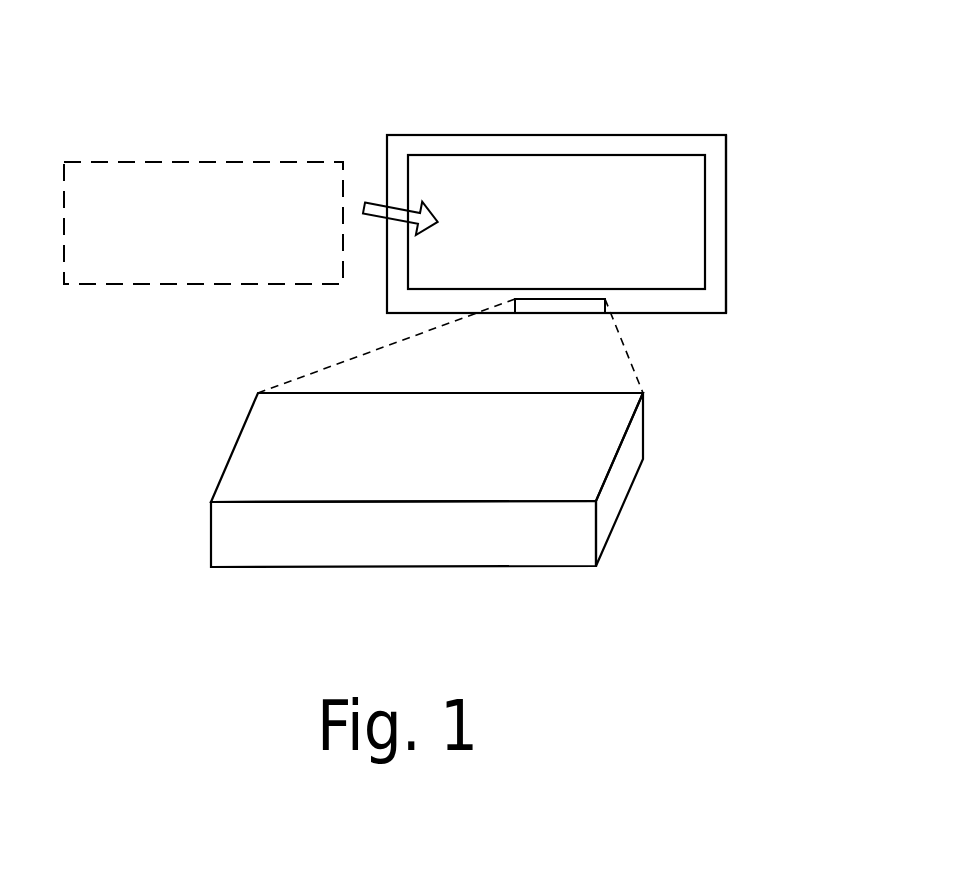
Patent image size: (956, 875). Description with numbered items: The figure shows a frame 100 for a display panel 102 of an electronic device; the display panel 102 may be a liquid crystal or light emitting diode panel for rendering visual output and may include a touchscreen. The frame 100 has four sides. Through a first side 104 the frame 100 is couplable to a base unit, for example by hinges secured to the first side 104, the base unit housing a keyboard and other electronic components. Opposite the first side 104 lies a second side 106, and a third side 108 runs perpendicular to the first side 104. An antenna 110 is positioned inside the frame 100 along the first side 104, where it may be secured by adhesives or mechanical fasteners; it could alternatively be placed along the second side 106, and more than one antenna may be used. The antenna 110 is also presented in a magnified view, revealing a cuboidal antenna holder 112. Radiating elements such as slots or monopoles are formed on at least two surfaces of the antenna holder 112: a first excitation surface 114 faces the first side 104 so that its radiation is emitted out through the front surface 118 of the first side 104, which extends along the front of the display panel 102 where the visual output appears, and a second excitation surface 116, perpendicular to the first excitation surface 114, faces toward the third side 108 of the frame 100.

The frame 100 is at (434, 66).
The display panel 102 is at (203, 162).
The first side 104 is at (660, 315).
The second side 106 is at (587, 135).
The third side 108 is at (726, 232).
The antenna 110 is at (552, 298).
The antenna holder 112 is at (373, 518).
The first excitation surface 114 is at (557, 548).
The second excitation surface 116 is at (608, 503).
The front surface 118 is at (428, 298).